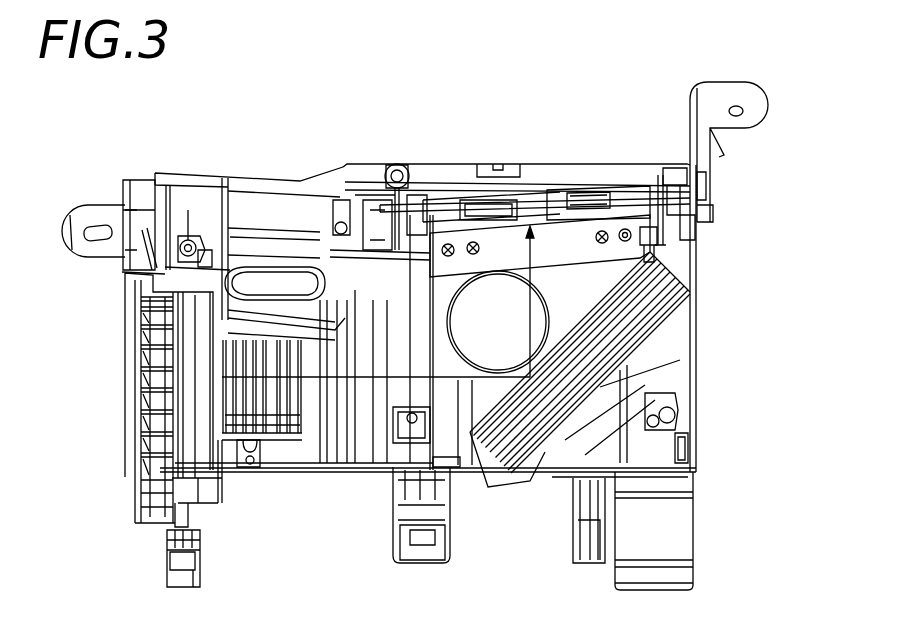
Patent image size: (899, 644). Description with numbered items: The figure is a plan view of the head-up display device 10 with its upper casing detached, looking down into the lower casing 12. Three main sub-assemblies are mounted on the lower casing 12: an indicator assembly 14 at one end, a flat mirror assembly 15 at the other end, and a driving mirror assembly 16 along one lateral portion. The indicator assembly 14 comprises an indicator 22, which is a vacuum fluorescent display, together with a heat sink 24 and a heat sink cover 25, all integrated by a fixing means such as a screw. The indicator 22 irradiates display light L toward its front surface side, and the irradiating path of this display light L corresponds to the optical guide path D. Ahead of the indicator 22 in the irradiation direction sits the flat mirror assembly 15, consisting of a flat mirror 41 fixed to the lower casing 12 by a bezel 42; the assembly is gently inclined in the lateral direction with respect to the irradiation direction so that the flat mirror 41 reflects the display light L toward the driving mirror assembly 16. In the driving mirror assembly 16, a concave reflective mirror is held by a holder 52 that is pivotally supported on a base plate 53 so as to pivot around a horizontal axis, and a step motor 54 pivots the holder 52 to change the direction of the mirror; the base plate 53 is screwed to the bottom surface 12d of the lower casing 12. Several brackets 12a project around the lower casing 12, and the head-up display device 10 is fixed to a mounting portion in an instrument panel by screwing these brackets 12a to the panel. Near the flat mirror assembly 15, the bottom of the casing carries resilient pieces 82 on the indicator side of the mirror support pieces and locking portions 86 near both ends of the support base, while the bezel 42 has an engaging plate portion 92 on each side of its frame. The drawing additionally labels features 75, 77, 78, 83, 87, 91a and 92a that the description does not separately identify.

The head-up display device 10 is at (520, 107).
The lower casing 12 is at (692, 348).
The bracket 12a is at (80, 205).
The bottom surface 12d is at (577, 295).
The indicator assembly 14 is at (124, 456).
The flat mirror assembly 15 is at (563, 454).
The driving mirror assembly 16 is at (558, 176).
The indicator 22 is at (190, 422).
The heat sink 24 is at (153, 378).
The heat sink cover 25 is at (125, 327).
The flat mirror 41 is at (660, 172).
The bezel 42 is at (555, 477).
The holder 52 is at (598, 185).
The base plate 53 is at (690, 240).
The step motor 54 is at (368, 300).
The screw 75 is at (470, 240).
The screw 77 is at (446, 243).
The bracket plate 78 is at (485, 205).
The resilient piece 82 is at (690, 205).
The latch tab 83 is at (700, 175).
The locking portion 86 is at (390, 176).
The connector block 87 is at (406, 180).
The hinge block 91a is at (678, 165).
The engaging plate portion 92 is at (385, 175).
The pivot pin 92a is at (396, 168).
The optical guide path D is at (312, 400).
The display light L is at (433, 380).